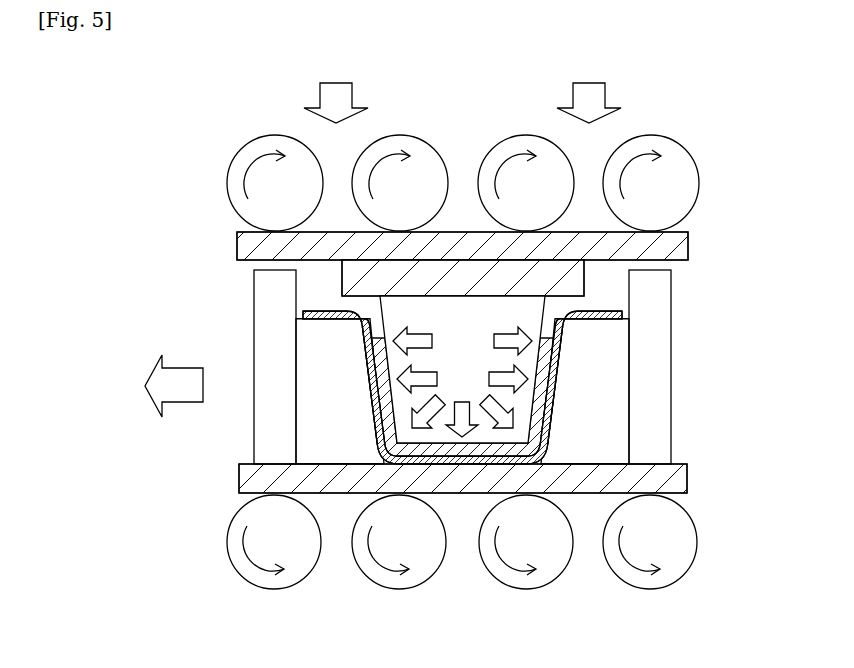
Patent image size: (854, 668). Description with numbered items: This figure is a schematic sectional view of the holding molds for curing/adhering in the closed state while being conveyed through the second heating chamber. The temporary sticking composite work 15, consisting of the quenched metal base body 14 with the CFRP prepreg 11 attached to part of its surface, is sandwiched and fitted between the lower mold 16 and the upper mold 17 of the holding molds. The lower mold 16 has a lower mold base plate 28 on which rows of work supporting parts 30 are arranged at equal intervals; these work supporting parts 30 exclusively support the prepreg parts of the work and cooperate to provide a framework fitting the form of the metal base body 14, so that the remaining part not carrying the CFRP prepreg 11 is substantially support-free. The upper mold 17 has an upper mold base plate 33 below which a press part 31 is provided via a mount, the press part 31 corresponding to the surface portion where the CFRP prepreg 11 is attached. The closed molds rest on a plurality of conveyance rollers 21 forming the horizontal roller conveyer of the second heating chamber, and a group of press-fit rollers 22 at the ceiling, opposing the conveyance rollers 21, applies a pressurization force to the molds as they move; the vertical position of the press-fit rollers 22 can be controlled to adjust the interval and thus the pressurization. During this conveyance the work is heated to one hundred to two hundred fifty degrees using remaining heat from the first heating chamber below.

The press-fit rollers 22 is at (248, 152).
The conveyance rollers 21 is at (462, 566).
The upper mold base plate 33 is at (690, 241).
The lower mold base plate 28 is at (682, 482).
The upper mold of holding molds for curing/adhering 17 is at (463, 228).
The lower mold of holding molds for curing/adhering 16 is at (462, 498).
The work supporting parts 30 is at (313, 403).
The press part 31 is at (568, 317).
The temporary sticking composite work 15 is at (396, 370).
The quenched metal base body 14 is at (326, 311).
The CFRP prepreg 11 is at (380, 368).